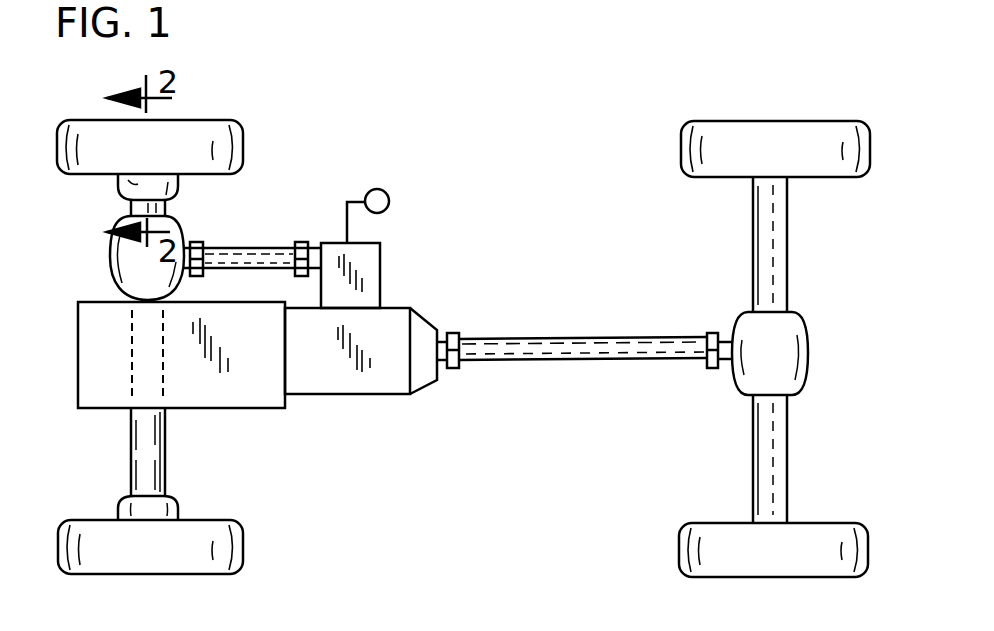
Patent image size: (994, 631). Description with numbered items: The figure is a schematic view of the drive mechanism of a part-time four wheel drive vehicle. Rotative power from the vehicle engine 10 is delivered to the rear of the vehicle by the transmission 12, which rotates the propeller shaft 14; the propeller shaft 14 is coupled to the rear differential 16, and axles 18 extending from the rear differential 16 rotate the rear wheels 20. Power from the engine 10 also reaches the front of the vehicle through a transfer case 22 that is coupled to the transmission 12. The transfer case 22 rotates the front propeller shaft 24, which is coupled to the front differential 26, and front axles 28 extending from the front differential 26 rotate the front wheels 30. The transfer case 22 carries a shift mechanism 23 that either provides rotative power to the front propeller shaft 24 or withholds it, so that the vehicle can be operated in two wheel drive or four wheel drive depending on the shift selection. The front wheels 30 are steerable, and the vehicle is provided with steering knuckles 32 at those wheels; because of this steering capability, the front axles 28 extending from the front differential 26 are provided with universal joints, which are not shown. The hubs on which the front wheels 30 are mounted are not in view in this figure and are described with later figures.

The vehicle engine 10 is at (232, 392).
The transmission 12 is at (337, 377).
The propeller shaft 14 is at (587, 365).
The rear differential 16 is at (793, 358).
The axles 18 is at (777, 257).
The rear wheels 20 is at (730, 132).
The transfer case 22 is at (333, 250).
The shift mechanism 23 is at (356, 199).
The front propeller shaft 24 is at (250, 253).
The front differential 26 is at (112, 258).
The front axles 28 is at (130, 209).
The front wheels 30 is at (200, 127).
The steering knuckles 32 is at (117, 182).